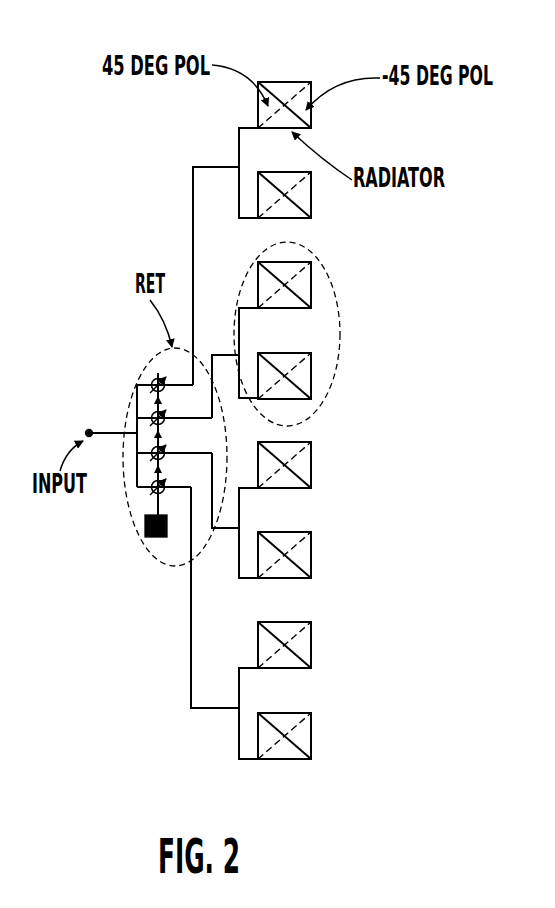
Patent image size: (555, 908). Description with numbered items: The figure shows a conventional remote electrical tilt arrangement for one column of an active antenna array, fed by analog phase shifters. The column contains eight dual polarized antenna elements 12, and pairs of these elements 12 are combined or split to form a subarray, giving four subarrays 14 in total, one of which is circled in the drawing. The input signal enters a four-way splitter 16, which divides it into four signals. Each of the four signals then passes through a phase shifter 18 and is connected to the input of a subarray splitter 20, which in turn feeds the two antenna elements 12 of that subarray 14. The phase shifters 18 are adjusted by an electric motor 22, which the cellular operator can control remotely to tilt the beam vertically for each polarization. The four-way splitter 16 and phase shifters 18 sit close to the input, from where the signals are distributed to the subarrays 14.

The dual polarized antenna element 12 is at (293, 81).
The subarray 14 is at (340, 370).
The four-way splitter 16 is at (133, 438).
The phase shifter 18 is at (150, 375).
The subarray splitter 20 is at (236, 163).
The electric motor 22 is at (155, 541).